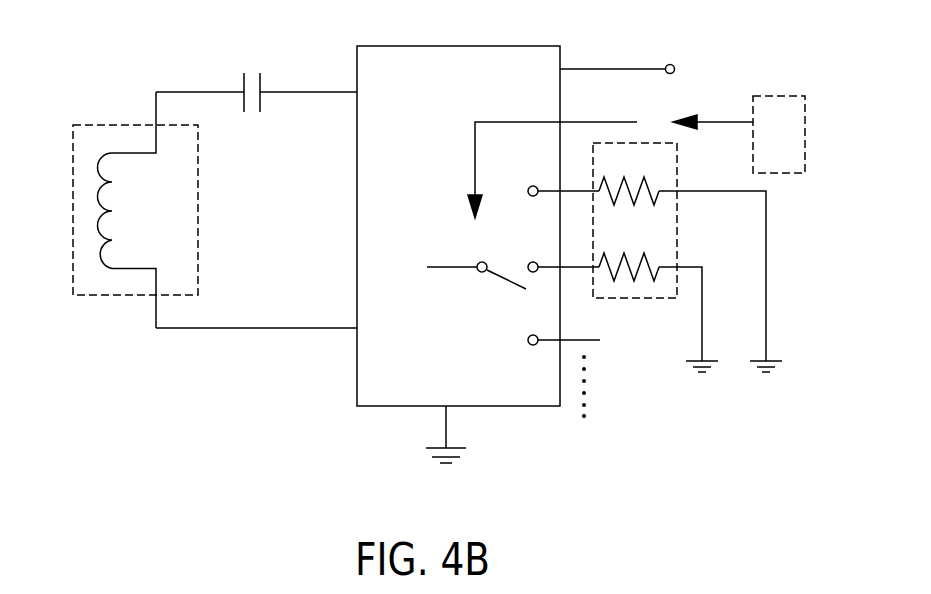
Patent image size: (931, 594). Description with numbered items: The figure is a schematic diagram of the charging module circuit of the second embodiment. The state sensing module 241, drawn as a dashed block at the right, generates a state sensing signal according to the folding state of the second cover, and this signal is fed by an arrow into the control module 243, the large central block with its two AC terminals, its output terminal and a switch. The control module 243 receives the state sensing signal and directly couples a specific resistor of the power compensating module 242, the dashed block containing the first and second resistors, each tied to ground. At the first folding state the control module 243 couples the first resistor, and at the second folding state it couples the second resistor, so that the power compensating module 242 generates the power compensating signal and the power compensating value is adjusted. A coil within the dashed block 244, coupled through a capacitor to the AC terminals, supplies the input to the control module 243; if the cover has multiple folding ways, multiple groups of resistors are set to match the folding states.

The state sensing module 241 is at (785, 96).
The power compensating module 242 is at (678, 176).
The control module 243 is at (458, 46).
The coil / inductor module 244 is at (120, 124).